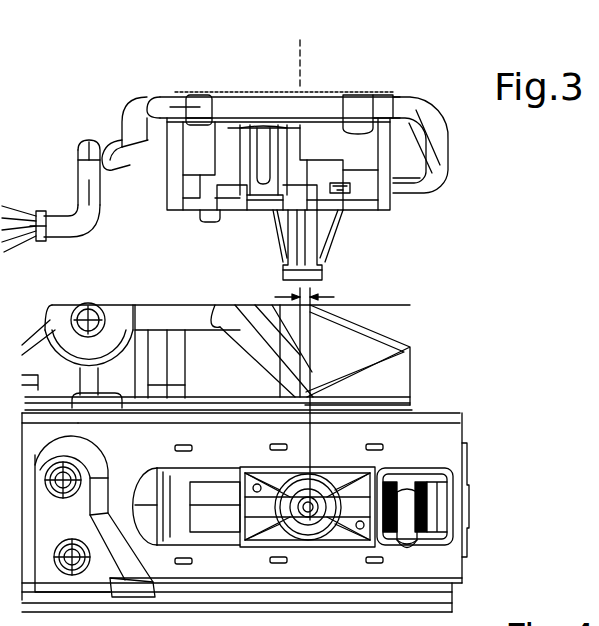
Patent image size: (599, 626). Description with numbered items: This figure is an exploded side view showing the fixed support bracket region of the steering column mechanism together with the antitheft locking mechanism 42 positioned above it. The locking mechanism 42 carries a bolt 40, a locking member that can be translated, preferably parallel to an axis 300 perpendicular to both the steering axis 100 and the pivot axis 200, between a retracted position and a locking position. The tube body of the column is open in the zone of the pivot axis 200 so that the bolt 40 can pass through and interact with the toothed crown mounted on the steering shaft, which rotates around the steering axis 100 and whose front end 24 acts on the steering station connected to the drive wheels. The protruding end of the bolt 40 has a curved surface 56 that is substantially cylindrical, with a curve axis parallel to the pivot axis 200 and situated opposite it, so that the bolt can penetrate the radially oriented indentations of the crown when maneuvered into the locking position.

The axis 300 is at (298, 52).
The antitheft locking mechanism 42 is at (331, 118).
The bolt 40 is at (320, 262).
The curved surface 56 is at (282, 285).
The pivot axis 200 is at (308, 513).
The steering axis 100 is at (467, 506).
The front end 24 is at (410, 498).